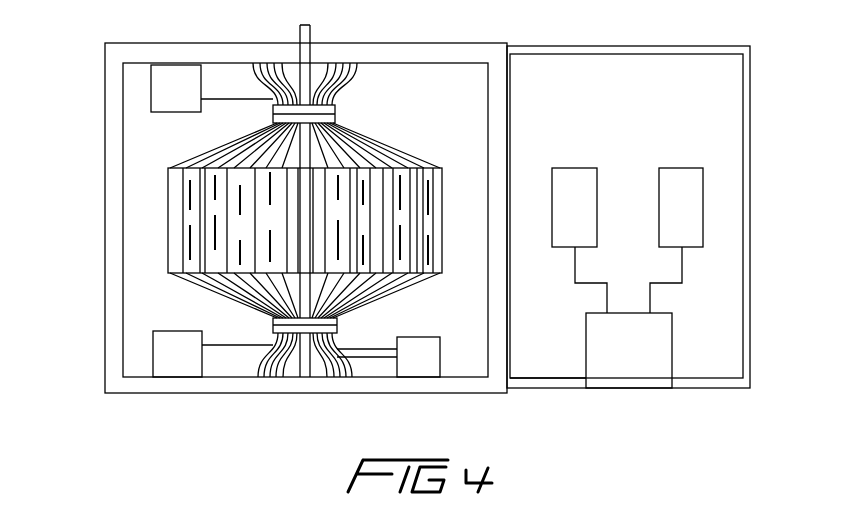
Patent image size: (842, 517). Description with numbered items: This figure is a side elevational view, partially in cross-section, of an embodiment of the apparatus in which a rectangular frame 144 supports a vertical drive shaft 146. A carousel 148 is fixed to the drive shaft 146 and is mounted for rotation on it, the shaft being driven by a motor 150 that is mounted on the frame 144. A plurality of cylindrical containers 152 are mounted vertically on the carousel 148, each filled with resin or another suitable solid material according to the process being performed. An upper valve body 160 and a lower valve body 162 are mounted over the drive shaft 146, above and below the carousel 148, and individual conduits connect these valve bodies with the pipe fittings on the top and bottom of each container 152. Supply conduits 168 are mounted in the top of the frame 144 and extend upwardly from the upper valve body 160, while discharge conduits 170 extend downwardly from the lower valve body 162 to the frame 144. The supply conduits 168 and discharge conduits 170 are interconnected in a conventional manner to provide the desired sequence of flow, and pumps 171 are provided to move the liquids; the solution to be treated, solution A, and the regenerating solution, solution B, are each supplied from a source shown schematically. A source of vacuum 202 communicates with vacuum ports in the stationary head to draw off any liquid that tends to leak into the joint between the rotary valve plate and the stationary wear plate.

The rectangular frame 144 is at (228, 52).
The vertical drive shaft 146 is at (311, 35).
The carousel 148 is at (241, 220).
The motor 150 is at (418, 347).
The cylindrical containers 152 is at (193, 208).
The upper valve body 160 is at (336, 111).
The lower valve body 162 is at (338, 326).
The supply conduits 168 is at (628, 215).
The discharge conduits 170 is at (558, 377).
The pumps 171 is at (612, 360).
The source of vacuum 202 is at (163, 103).